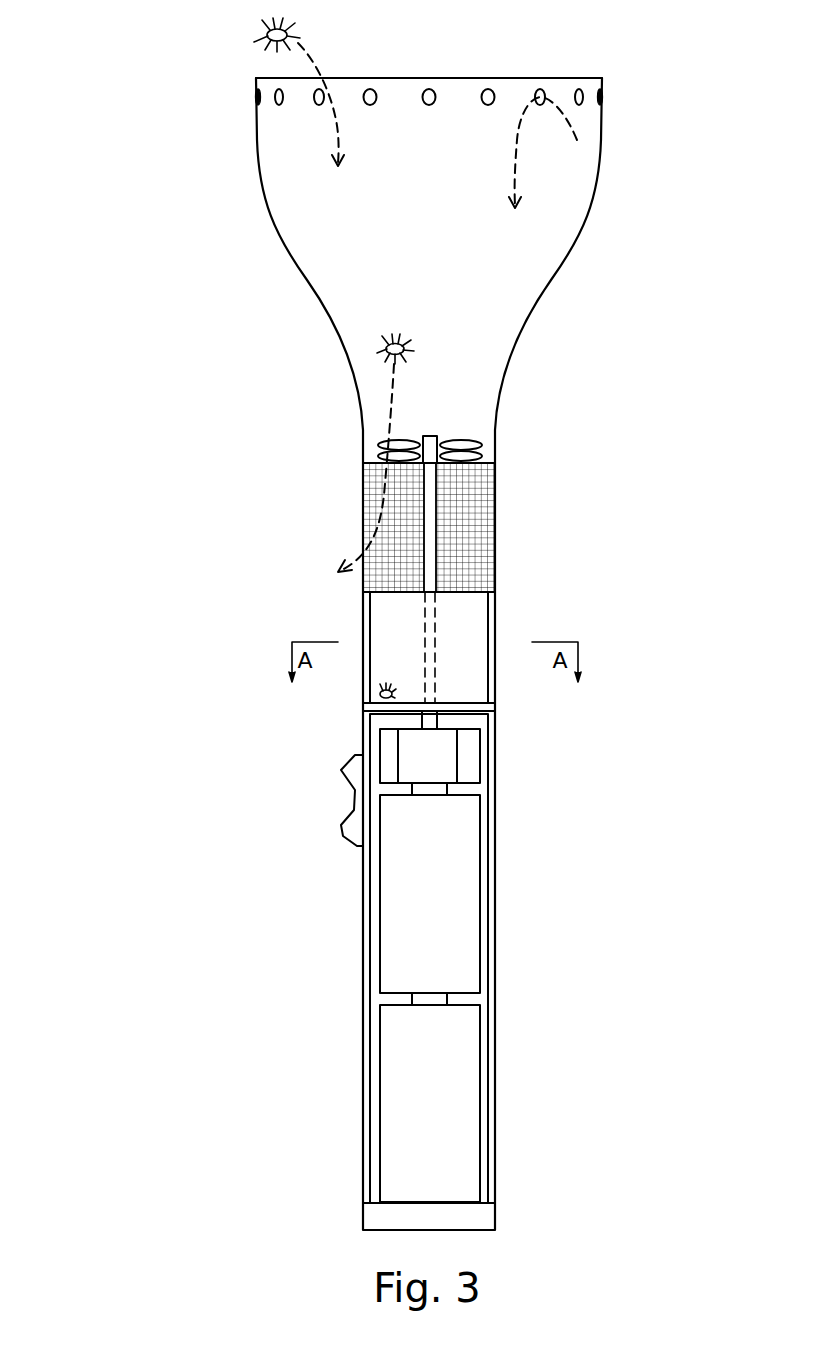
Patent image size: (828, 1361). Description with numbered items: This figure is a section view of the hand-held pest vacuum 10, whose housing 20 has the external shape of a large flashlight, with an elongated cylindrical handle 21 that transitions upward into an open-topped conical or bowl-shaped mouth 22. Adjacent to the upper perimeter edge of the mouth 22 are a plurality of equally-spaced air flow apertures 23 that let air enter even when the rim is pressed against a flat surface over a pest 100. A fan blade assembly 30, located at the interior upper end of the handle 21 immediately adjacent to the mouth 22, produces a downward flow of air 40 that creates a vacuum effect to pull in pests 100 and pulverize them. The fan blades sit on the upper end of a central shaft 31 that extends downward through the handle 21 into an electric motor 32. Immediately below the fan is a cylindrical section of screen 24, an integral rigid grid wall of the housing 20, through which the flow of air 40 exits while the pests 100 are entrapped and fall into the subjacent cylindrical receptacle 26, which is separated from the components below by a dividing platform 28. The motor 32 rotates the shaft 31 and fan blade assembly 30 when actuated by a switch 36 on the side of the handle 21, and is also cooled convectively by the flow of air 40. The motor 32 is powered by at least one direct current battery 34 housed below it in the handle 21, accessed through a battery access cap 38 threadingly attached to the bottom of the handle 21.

The hand-held pest vacuum 10 is at (104, 360).
The housing 20 is at (510, 307).
The handle 21 is at (363, 1067).
The mouth 22 is at (557, 78).
The air flow apertures 23 is at (486, 88).
The screen 24 is at (376, 493).
The receptacle 26 is at (472, 657).
The dividing platform 28 is at (474, 709).
The fan blade assembly 30 is at (470, 445).
The shaft 31 is at (420, 463).
The motor 32 is at (445, 758).
The battery 34 is at (405, 905).
The switch 36 is at (357, 777).
The battery access cap 38 is at (453, 1217).
The flow of air 40 is at (337, 120).
The pest 100 is at (265, 36).